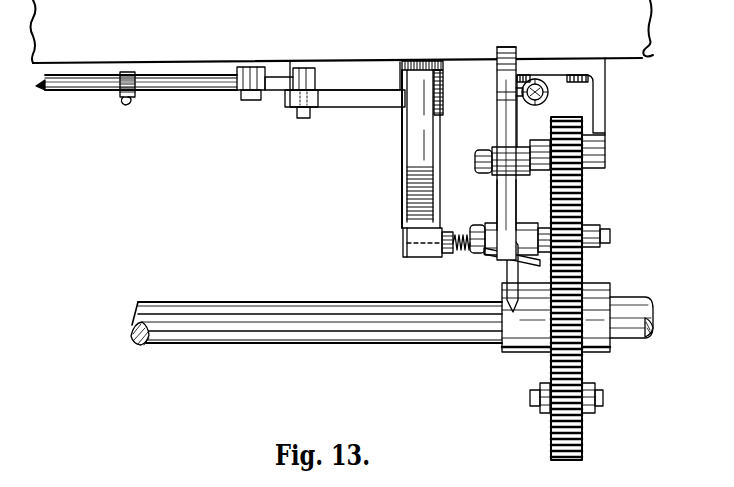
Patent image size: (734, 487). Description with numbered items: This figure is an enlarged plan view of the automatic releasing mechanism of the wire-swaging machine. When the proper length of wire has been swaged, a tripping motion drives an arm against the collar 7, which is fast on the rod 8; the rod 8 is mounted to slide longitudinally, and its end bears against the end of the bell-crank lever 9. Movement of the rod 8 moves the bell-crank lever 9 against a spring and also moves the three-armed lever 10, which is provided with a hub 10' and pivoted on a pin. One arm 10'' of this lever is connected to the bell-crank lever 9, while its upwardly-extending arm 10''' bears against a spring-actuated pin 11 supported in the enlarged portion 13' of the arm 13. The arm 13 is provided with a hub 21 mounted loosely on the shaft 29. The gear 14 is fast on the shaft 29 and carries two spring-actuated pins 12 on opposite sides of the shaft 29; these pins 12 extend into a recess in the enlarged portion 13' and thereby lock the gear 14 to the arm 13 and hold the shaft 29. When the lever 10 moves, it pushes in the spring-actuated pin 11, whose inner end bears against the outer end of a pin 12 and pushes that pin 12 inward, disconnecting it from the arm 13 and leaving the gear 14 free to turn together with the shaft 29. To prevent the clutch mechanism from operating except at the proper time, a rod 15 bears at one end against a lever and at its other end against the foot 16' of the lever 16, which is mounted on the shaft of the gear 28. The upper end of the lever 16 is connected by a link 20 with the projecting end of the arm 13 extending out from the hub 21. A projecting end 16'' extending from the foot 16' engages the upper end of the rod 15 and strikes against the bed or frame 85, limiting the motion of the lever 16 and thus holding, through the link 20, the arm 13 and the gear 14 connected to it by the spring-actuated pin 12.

The collar 7 is at (120, 100).
The rod 8 is at (67, 94).
The bell-crank lever 9 is at (275, 90).
The three-armed lever 10 is at (365, 145).
The hub 10' is at (439, 88).
The arm 10'' is at (345, 113).
The upwardly-extending arm 10''' is at (409, 247).
The spring-actuated pin 11 is at (463, 255).
The spring-actuated pin 12 is at (611, 235).
The arm 13 is at (511, 257).
The enlarged portion 13' is at (509, 268).
The gear 14 is at (583, 425).
The rod 15 is at (534, 105).
The lever 16 is at (540, 165).
The foot 16' is at (491, 153).
The projecting end 16'' is at (524, 31).
The link 20 is at (496, 197).
The hub 21 is at (503, 347).
The gear 28 is at (560, 116).
The shaft 29 is at (248, 344).
The bed or frame 85 is at (353, 33).